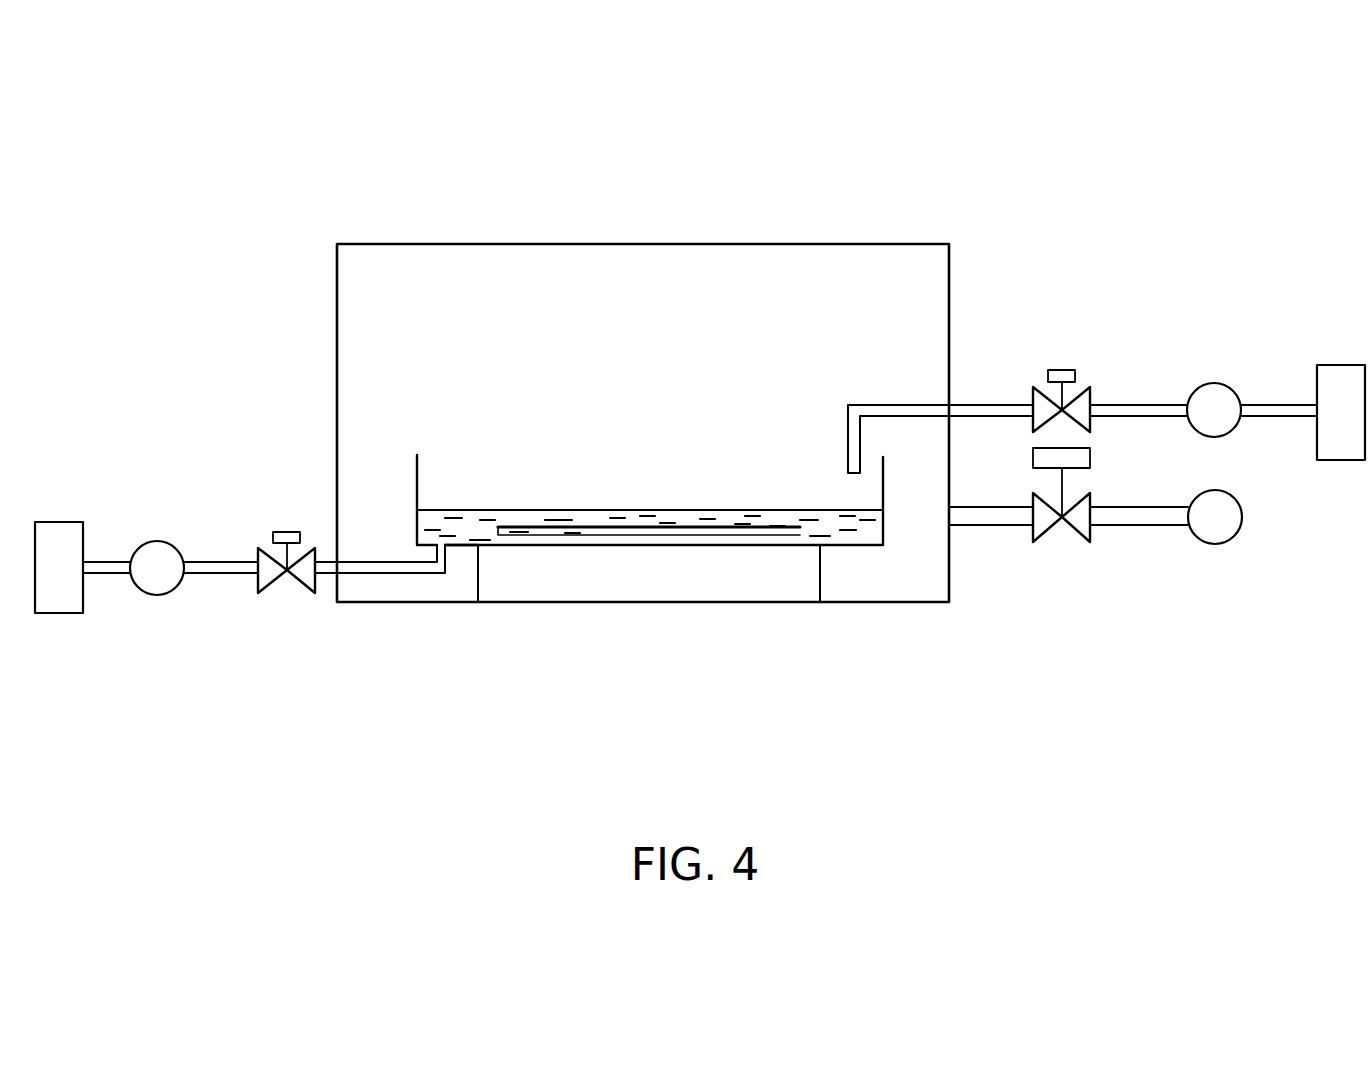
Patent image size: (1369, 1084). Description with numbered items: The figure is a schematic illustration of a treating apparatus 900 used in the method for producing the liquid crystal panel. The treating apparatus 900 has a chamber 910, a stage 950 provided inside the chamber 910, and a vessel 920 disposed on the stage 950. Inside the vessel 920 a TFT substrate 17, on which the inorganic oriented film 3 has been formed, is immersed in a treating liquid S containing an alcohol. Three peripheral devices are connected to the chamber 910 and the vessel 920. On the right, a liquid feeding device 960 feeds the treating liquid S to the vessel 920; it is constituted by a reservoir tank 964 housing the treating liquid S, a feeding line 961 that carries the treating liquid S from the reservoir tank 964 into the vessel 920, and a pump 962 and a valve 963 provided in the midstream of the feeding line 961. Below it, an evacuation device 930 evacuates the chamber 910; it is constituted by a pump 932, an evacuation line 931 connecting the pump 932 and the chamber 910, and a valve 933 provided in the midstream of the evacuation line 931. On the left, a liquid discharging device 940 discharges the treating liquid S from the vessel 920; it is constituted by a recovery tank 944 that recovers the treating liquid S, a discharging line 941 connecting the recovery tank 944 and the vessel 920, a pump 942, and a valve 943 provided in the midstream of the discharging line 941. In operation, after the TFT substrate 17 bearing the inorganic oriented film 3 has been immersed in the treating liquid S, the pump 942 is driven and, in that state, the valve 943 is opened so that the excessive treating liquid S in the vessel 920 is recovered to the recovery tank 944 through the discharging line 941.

The treating apparatus 900 is at (1027, 240).
The chamber 910 is at (950, 330).
The vessel 920 is at (417, 477).
The inorganic oriented film 3 is at (590, 528).
The TFT substrate 17 is at (547, 538).
The treating liquid S is at (850, 525).
The stage 950 is at (660, 590).
The liquid discharging device 940 is at (240, 635).
The discharging line 941 is at (337, 576).
The pump 942 is at (163, 595).
The valve 943 is at (272, 593).
The recovery tank 944 is at (72, 608).
The evacuation device 930 is at (1095, 566).
The evacuation line 931 is at (997, 525).
The pump 932 is at (1195, 560).
The valve 933 is at (1078, 523).
The liquid feeding device 960 is at (1106, 364).
The feeding line 961 is at (1143, 412).
The pump 962 is at (1217, 383).
The valve 963 is at (1097, 393).
The reservoir tank 964 is at (1325, 387).